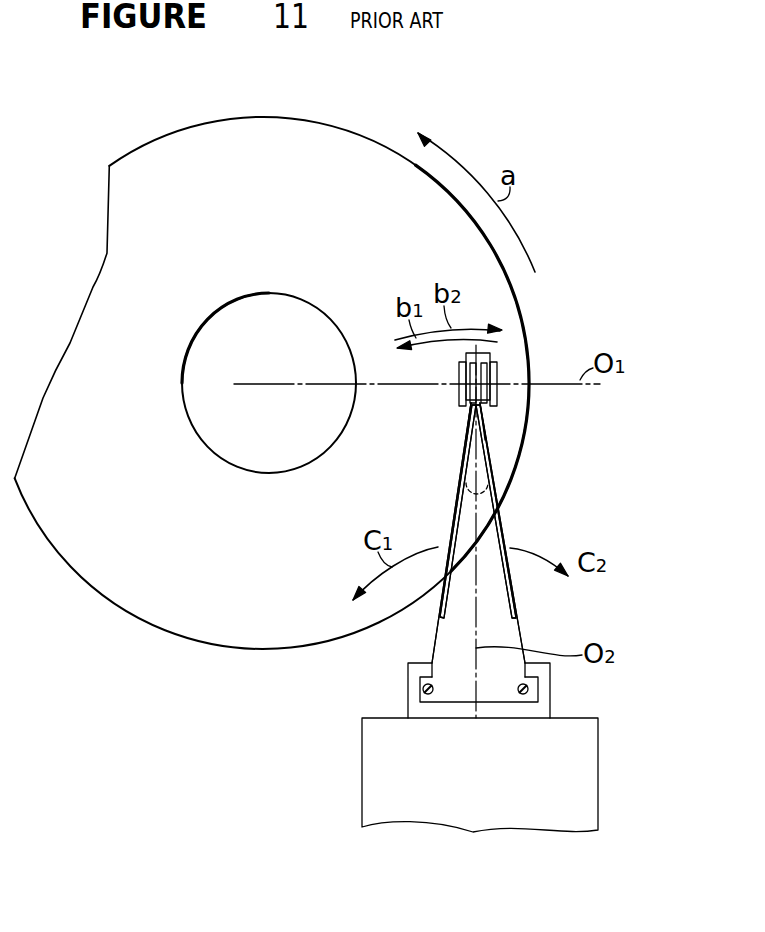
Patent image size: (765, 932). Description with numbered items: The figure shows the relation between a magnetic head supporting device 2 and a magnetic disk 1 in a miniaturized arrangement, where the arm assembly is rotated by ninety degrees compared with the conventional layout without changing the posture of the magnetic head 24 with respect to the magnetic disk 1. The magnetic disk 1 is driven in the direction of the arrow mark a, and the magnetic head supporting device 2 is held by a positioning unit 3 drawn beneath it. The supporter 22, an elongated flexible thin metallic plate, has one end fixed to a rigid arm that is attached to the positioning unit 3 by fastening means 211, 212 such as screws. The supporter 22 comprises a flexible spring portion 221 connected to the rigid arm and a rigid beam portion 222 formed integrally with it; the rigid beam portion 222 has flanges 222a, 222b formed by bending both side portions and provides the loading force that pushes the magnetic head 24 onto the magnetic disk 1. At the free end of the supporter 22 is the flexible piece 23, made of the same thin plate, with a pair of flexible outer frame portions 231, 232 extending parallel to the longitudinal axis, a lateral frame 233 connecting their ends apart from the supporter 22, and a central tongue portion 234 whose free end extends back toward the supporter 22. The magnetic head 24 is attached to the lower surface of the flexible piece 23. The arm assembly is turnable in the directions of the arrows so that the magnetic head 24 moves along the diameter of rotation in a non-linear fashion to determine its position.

The magnetic disk 1 is at (177, 613).
The magnetic head supporting device 2 is at (496, 673).
The positioning unit 3 is at (572, 768).
The supporter 22 is at (525, 631).
The flexible piece 23 is at (487, 413).
The magnetic head 24 is at (493, 358).
The fastening means 211 is at (530, 690).
The fastening means 212 is at (425, 690).
The flexible spring portion 221 is at (503, 673).
The rigid beam portion 222 is at (503, 533).
The flange 222a is at (512, 593).
The flange 222b is at (440, 612).
The flexible outer frame portion 231 is at (497, 394).
The flexible outer frame portion 232 is at (462, 393).
The lateral frame 233 is at (480, 358).
The central tongue portion 234 is at (496, 370).